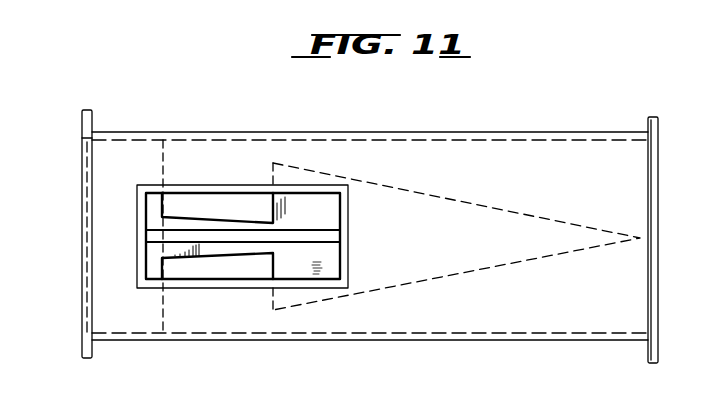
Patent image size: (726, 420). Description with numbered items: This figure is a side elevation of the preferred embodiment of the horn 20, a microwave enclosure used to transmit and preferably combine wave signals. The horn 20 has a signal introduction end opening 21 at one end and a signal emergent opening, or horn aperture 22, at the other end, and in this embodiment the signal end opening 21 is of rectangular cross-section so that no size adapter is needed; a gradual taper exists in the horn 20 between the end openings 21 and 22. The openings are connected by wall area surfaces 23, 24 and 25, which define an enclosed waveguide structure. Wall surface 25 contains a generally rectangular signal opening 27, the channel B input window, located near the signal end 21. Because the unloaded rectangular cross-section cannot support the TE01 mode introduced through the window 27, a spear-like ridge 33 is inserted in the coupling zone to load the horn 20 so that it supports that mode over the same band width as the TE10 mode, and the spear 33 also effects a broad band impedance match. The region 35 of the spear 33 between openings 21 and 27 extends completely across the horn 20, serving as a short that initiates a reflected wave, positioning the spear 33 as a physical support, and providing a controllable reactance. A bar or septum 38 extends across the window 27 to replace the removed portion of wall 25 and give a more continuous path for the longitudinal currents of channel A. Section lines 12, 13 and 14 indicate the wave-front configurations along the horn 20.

The section line 12- 12 is at (210, 122).
The section line 13- 13 is at (354, 131).
The section line 14- 14 is at (577, 130).
The horn 20 is at (527, 117).
The signal introduction end opening 21 is at (95, 188).
The horn aperture 22 is at (650, 205).
The wall area surface 23 is at (457, 128).
The wall area surface 24 is at (460, 341).
The wall surface 25 is at (516, 301).
The signal opening 27 is at (312, 198).
The spear like ridge 33 is at (253, 258).
The solid portion of the spear 35 is at (520, 213).
The septum 38 is at (330, 222).